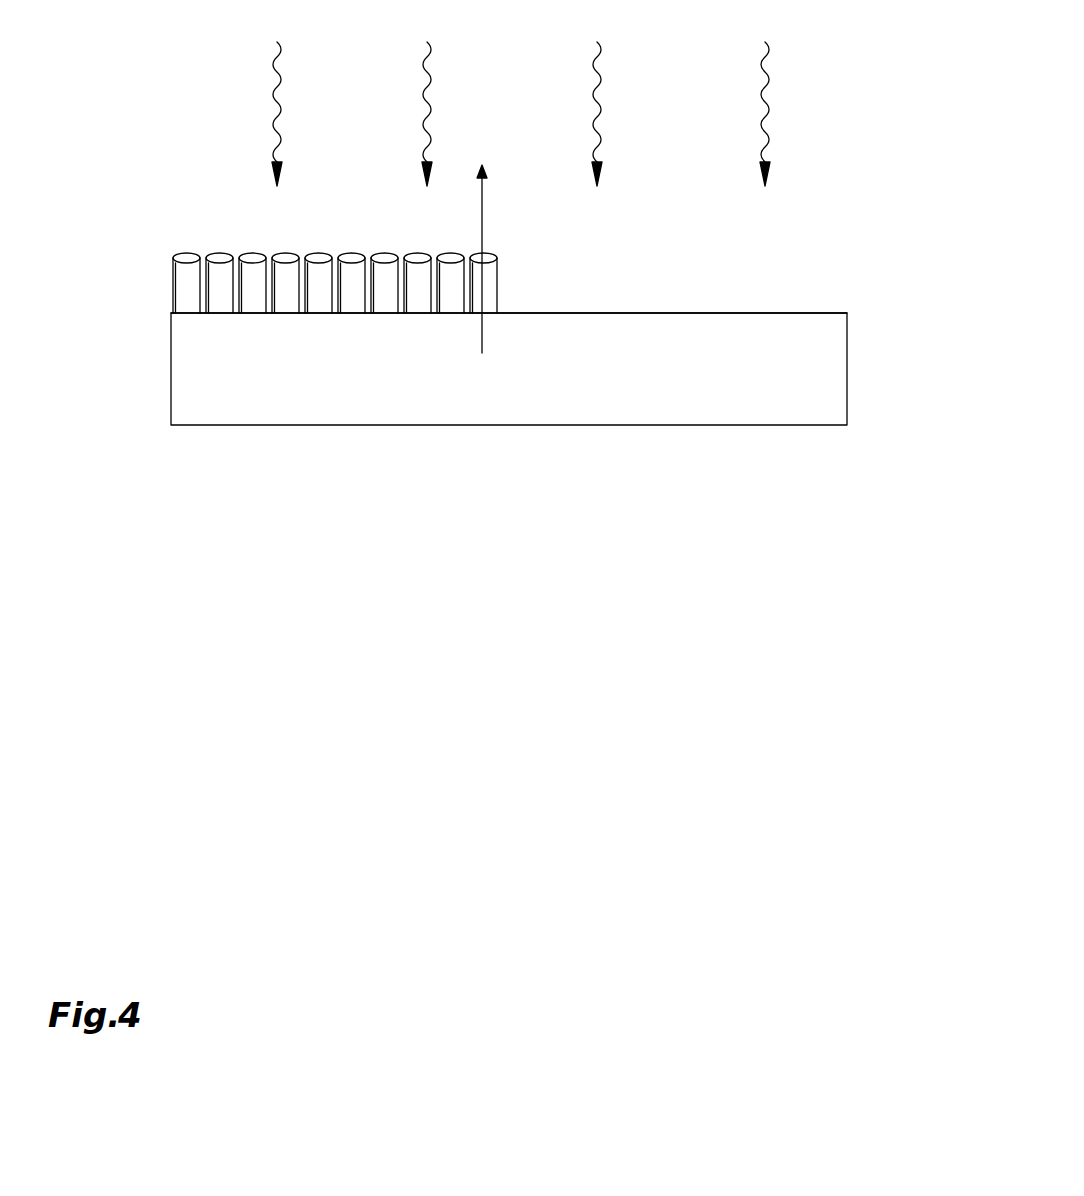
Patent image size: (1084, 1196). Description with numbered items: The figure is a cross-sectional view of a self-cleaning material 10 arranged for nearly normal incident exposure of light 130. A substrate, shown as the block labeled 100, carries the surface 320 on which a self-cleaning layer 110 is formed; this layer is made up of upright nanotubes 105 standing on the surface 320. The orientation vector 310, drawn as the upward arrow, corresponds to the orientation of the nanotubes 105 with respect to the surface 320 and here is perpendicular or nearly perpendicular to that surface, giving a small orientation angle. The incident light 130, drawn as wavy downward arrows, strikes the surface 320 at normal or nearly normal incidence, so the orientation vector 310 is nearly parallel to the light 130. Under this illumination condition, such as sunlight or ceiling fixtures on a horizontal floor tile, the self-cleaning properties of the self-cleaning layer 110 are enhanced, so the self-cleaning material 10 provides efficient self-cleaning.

The self-cleaning material 10 is at (125, 152).
The substrate 100 is at (529, 382).
The nanotubes 105 is at (219, 252).
The self-cleaning layer 110 is at (168, 253).
The incident light 130 is at (830, 43).
The orientation vector 310 is at (483, 212).
The surface 320 is at (728, 312).